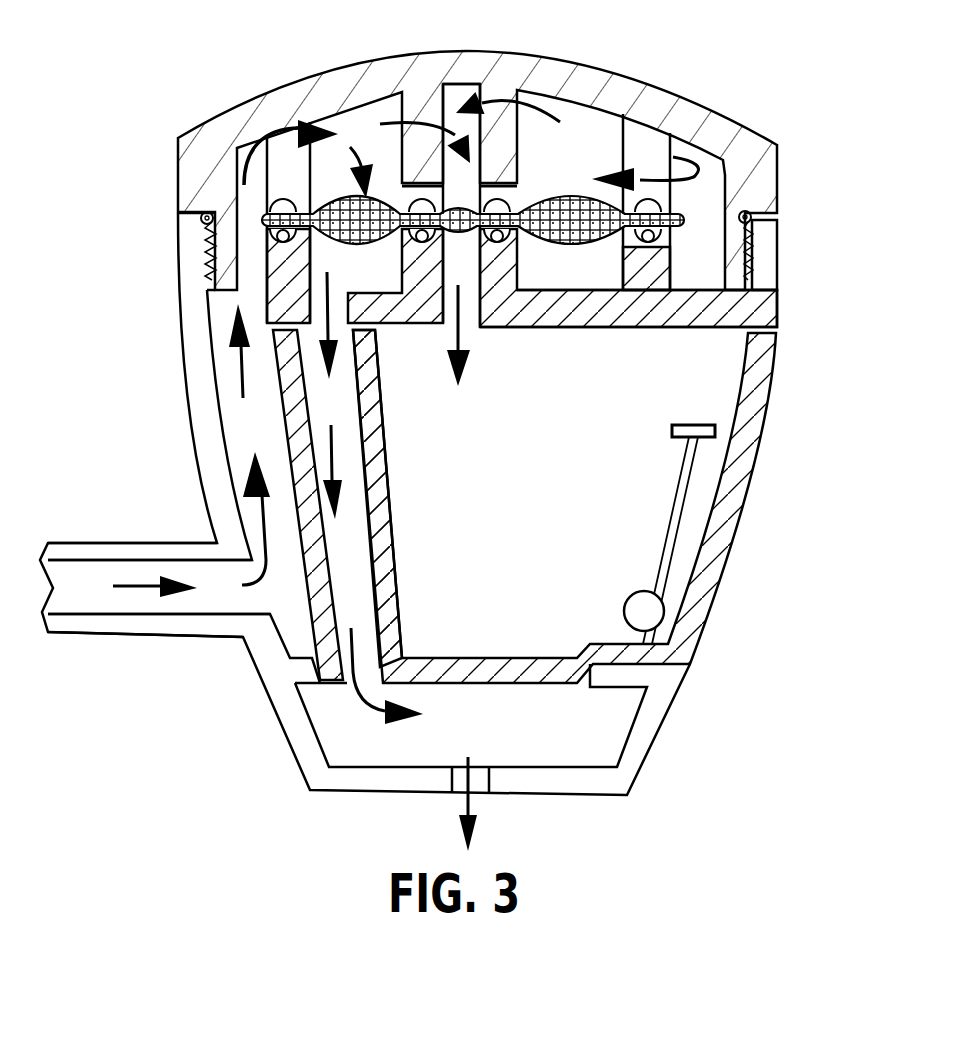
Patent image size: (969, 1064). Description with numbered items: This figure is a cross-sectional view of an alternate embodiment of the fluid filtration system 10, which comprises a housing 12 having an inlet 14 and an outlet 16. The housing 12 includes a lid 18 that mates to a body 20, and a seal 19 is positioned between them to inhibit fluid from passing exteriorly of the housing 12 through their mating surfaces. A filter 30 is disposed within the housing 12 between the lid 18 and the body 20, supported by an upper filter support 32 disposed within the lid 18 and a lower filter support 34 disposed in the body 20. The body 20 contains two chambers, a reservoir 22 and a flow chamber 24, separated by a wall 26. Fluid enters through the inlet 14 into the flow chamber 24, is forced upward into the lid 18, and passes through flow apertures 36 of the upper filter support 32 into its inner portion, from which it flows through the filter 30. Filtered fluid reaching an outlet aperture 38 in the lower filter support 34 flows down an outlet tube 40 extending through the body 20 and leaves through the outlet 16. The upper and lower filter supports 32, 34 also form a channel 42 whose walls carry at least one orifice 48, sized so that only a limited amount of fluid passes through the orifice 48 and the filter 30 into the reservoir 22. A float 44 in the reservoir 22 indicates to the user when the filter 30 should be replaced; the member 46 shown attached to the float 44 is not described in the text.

The fluid filtration system 10 is at (832, 485).
The housing 12 is at (193, 308).
The inlet 14 is at (135, 627).
The outlet 16 is at (487, 783).
The lid 18 is at (752, 152).
The seal 19 is at (754, 214).
The body 20 is at (767, 260).
The reservoir 22 is at (702, 400).
The flow chamber 24 is at (235, 408).
The wall 26 is at (287, 437).
The filter 30 is at (577, 220).
The upper filter support 32 is at (498, 90).
The lower filter support 34 is at (643, 273).
The flow apertures 36 is at (280, 186).
The outlet aperture 38 is at (328, 283).
The outlet tube 40 is at (330, 400).
The channel 42 is at (520, 267).
The float 44 is at (640, 607).
The float lever 46 is at (680, 478).
The orifice 48 is at (428, 183).